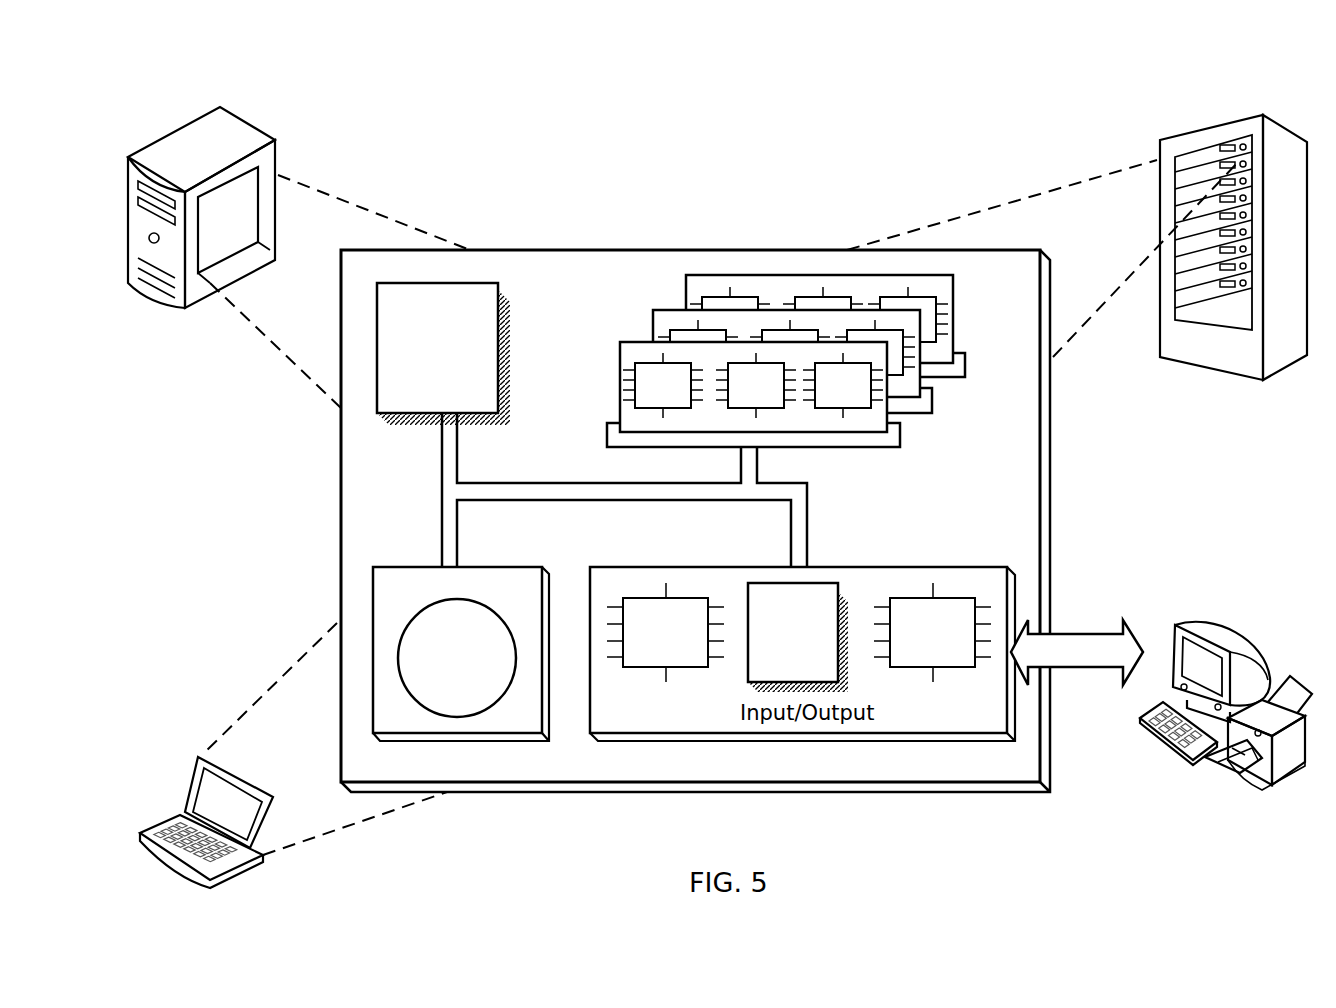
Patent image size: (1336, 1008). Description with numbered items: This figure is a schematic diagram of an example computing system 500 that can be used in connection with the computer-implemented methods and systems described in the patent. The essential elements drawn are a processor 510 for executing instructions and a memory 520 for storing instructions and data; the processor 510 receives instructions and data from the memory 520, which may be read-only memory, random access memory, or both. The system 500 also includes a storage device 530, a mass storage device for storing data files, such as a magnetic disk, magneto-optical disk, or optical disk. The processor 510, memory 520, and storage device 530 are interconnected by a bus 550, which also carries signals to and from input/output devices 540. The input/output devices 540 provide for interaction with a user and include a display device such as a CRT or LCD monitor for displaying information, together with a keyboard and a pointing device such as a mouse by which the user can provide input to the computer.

The computing system 500 is at (126, 70).
The processor 510 is at (443, 354).
The memory 520 is at (961, 410).
The storage device 530 is at (461, 654).
The input/output devices 540 is at (1176, 626).
The bus 550 is at (617, 500).